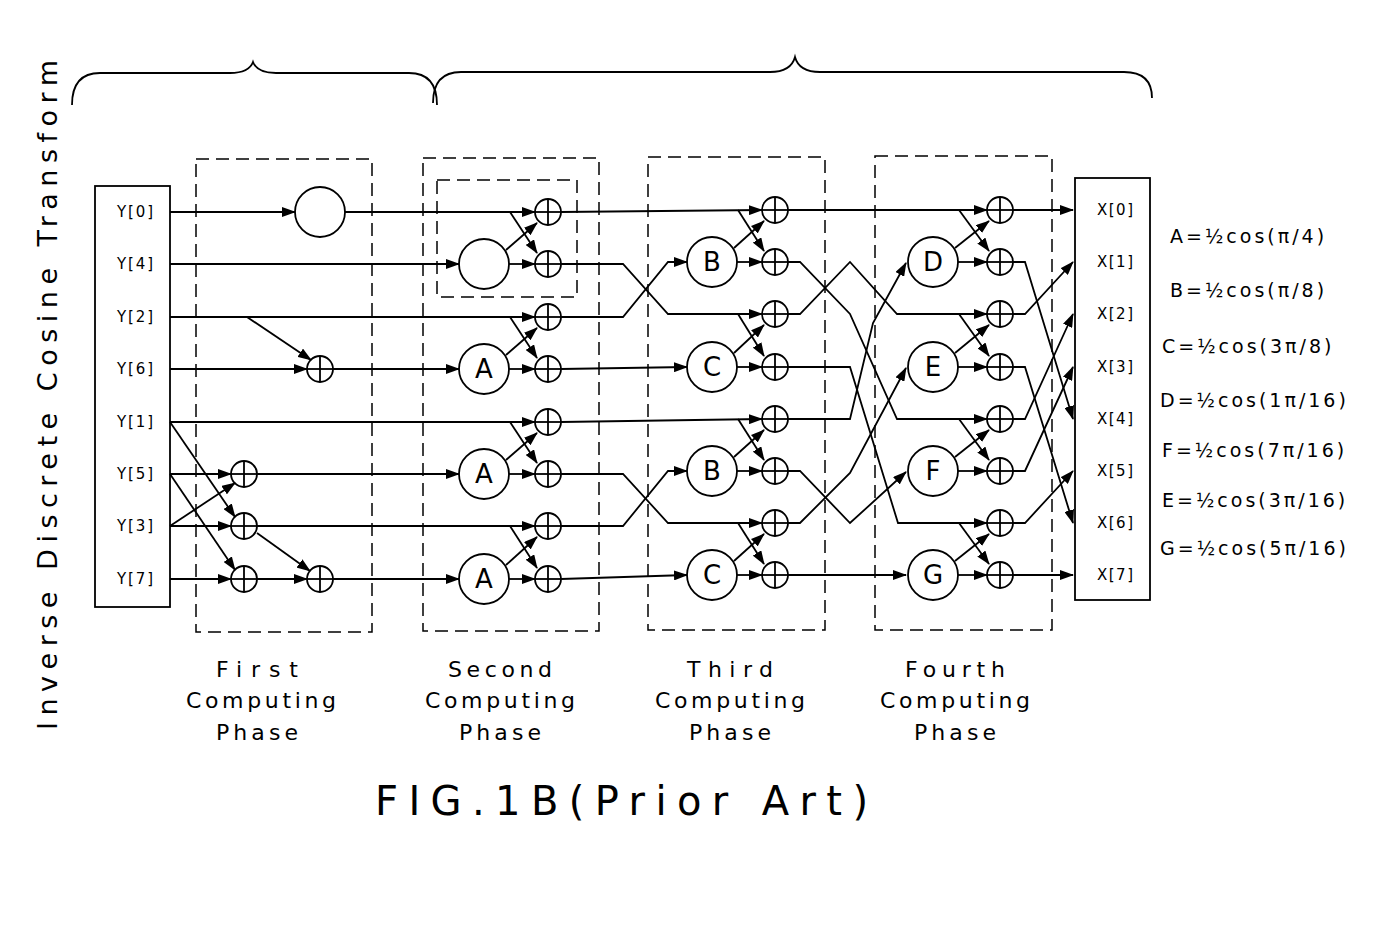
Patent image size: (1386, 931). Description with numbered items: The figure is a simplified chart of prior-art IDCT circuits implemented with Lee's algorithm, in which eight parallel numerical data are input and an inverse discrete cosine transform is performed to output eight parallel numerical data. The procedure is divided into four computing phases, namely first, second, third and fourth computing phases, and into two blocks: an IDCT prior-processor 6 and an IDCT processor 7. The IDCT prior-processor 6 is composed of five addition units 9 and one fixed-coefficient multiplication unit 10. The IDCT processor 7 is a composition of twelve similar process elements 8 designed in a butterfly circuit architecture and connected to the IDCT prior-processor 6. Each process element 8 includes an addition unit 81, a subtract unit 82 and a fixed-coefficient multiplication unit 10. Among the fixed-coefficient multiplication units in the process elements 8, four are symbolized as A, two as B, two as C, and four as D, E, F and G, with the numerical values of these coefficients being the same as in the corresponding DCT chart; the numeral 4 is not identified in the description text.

The IDCT prior-processor 6 is at (254, 327).
The IDCT processor 7 is at (787, 322).
The process element 8 is at (463, 180).
The addition unit 81 is at (549, 250).
The subtract unit 82 is at (540, 253).
The fixed-coefficient multiplication unit 10 is at (338, 195).
The addition unit 9 is at (333, 361).
The signal line routing of fourth computing phase 4 is at (933, 313).